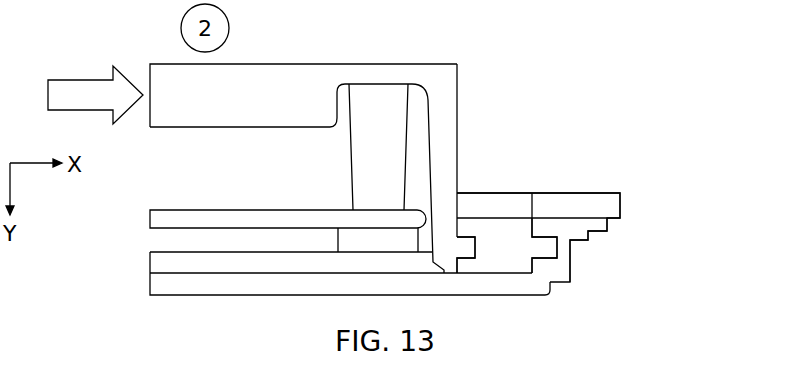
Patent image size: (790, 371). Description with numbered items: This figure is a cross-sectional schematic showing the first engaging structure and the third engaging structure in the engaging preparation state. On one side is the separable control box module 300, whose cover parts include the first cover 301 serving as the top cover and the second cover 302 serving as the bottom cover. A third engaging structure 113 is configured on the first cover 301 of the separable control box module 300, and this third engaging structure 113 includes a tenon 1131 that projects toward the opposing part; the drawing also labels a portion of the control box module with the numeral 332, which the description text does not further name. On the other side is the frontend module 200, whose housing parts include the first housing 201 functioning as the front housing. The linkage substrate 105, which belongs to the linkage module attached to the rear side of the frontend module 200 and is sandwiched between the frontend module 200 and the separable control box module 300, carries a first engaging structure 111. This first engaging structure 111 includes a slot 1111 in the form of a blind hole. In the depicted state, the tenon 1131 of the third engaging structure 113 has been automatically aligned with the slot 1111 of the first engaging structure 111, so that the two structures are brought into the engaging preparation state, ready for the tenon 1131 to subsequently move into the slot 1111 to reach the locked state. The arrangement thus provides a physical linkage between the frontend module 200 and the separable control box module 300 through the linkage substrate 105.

The separable control box module 300 is at (560, 113).
The first cover 301 is at (303, 95).
The elastic arm 332 is at (457, 110).
The third engaging structure 113 is at (478, 245).
The tenon 1131 is at (466, 255).
The second cover 302 is at (150, 253).
The frontend module 200 is at (673, 250).
The first housing 201 is at (620, 205).
The linkage substrate 105 is at (572, 262).
The first engaging structure 111 is at (534, 251).
The slot 1111 is at (544, 245).